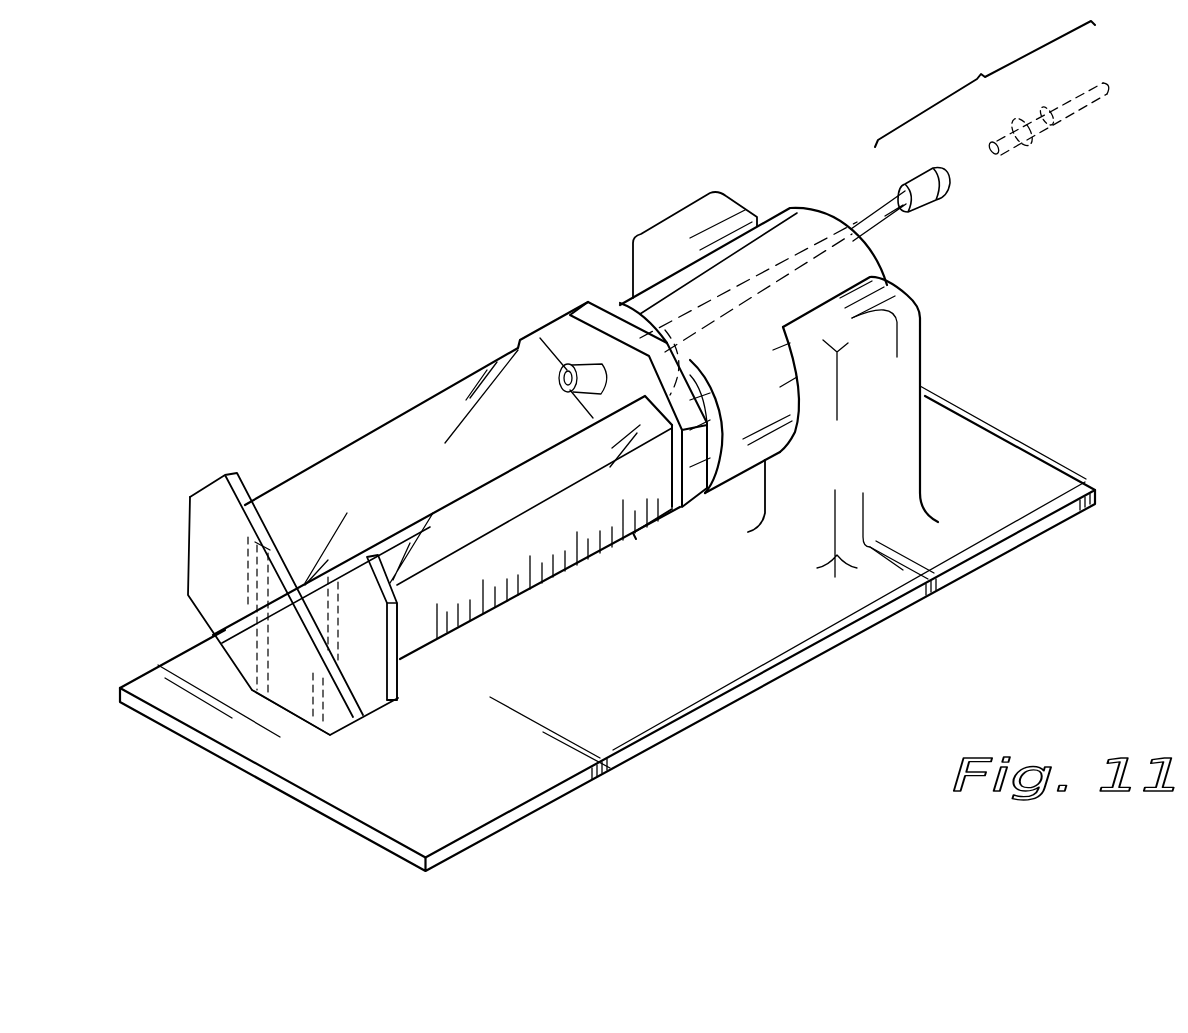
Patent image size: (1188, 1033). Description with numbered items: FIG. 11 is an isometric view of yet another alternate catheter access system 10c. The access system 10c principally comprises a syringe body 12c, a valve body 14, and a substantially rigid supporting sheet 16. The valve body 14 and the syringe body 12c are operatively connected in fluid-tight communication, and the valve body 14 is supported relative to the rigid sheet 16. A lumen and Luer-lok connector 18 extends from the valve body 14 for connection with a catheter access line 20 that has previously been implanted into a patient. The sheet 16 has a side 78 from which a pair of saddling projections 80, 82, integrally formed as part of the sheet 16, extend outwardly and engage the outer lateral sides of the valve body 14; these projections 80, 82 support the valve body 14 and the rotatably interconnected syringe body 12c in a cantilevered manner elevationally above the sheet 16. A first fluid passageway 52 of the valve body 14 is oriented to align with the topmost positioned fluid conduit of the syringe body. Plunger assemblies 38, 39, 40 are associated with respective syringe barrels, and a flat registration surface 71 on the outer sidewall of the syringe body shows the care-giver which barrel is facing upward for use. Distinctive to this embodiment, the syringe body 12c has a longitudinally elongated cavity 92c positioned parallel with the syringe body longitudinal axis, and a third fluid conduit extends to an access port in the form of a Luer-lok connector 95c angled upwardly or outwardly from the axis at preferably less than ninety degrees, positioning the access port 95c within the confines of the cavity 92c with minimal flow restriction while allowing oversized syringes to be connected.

The catheter access system 10c is at (648, 98).
The syringe body 12c is at (461, 480).
The valve body 14 is at (732, 314).
The rigid supporting sheet 16 is at (720, 701).
The lumen and Luer-lok connector 18 is at (893, 190).
The catheter access line 20 is at (1043, 147).
The plunger assembly 38 is at (408, 679).
The plunger assembly 39 is at (297, 733).
The plunger assembly 40 is at (176, 541).
The first fluid passageway 52 is at (718, 249).
The flat registration surface 71 is at (545, 538).
The side of sheet 78 is at (407, 820).
The saddling projection 80 is at (898, 378).
The saddling projection 82 is at (733, 220).
The longitudinally elongated cavity 92c is at (323, 486).
The Luer-lok connector 95c is at (580, 398).